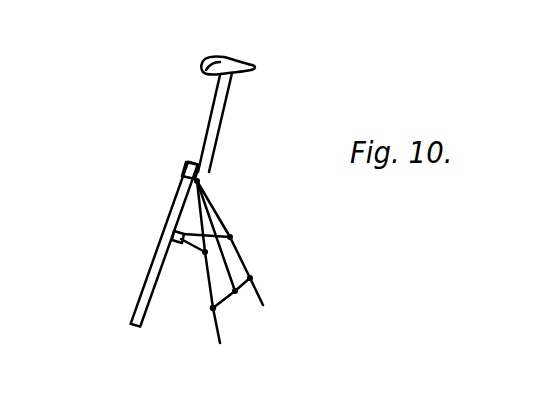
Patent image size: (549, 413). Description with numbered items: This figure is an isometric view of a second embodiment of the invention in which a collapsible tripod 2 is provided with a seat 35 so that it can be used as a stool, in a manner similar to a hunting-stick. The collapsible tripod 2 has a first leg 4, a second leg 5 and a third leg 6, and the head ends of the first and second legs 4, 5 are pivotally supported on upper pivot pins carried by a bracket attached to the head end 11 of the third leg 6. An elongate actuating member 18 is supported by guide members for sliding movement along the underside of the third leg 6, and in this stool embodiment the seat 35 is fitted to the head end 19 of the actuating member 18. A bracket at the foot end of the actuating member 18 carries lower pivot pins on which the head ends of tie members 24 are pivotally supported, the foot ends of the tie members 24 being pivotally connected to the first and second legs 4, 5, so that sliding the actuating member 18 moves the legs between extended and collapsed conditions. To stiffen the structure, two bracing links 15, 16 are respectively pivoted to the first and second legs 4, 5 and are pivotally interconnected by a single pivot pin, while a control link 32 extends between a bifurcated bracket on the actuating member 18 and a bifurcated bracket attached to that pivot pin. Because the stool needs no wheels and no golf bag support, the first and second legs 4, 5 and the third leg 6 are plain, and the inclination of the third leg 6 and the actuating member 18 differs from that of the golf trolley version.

The collapsible tripod 2 is at (116, 115).
The seat 35 is at (218, 63).
The head end of the actuating member 19 is at (224, 107).
The actuating member 18 is at (209, 145).
The head end of the third leg 11 is at (186, 183).
The third leg 6 is at (158, 265).
The tie member 24 is at (223, 226).
The control link 32 is at (234, 245).
The bracing link 16 is at (246, 284).
The second leg 5 is at (244, 270).
The first leg 4 is at (210, 293).
The bracing link 15 is at (218, 305).